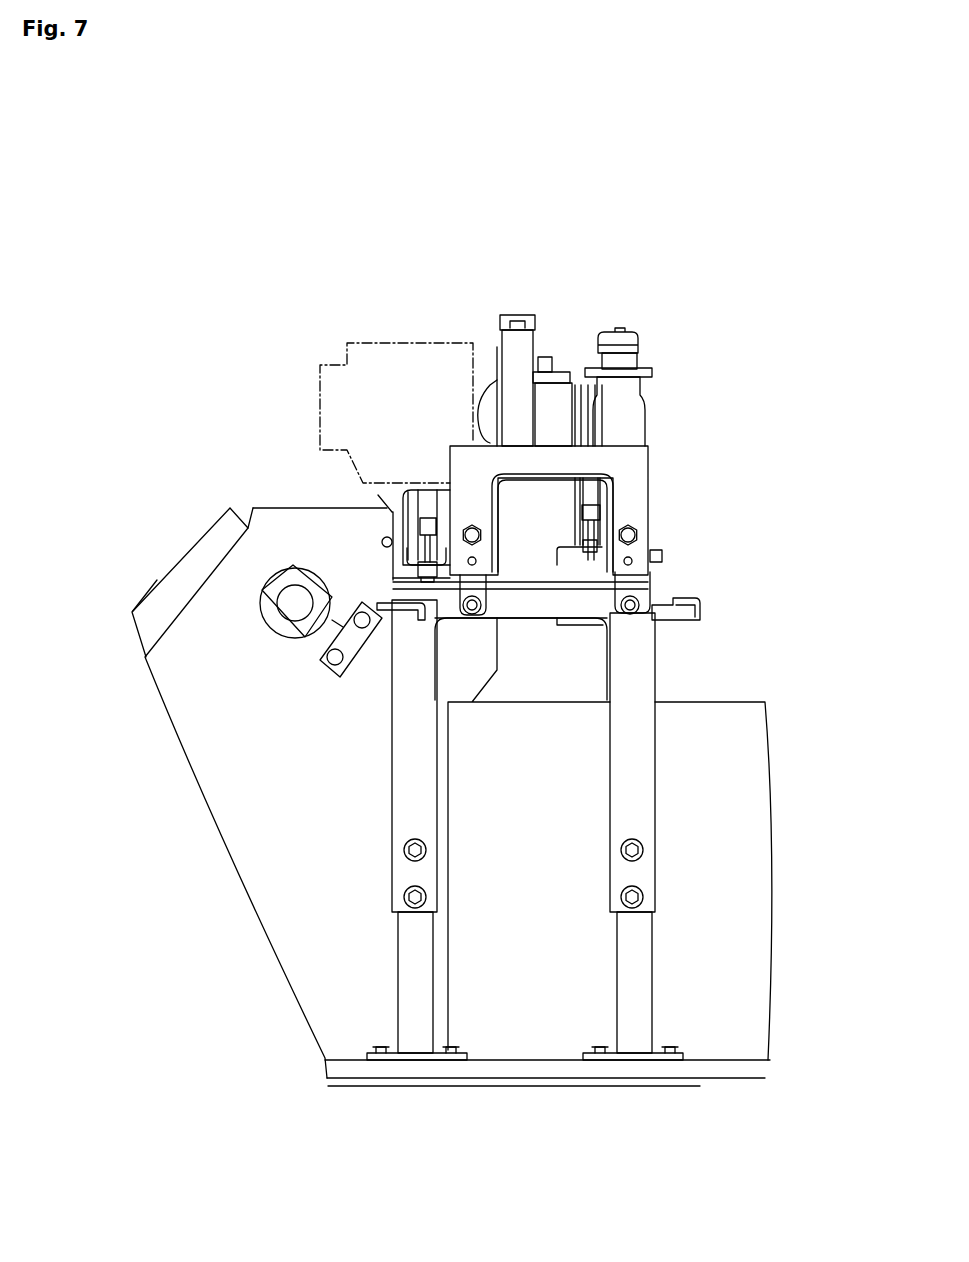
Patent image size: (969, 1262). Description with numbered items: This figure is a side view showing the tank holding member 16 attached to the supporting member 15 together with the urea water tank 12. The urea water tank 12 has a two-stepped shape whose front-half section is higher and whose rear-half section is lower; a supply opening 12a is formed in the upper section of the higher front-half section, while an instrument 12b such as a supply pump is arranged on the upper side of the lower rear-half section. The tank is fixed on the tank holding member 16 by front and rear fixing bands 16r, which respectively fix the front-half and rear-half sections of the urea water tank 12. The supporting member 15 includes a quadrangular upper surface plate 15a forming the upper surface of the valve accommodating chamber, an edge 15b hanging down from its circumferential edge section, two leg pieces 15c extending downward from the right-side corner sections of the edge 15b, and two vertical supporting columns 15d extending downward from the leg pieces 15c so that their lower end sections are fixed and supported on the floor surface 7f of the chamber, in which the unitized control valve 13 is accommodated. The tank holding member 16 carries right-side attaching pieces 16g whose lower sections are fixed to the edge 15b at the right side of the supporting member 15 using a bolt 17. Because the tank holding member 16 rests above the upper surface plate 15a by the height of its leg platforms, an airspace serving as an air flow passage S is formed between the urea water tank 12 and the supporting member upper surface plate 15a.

The floor surface 7f is at (512, 1050).
The urea water tank 12 is at (563, 395).
The supply opening 12a is at (632, 343).
The instrument 12b is at (397, 343).
The control valve 13 is at (717, 841).
The supporting member 15 is at (655, 742).
The upper surface plate 15a is at (568, 590).
The edge 15b is at (583, 602).
The leg piece 15c is at (415, 770).
The vertical supporting column 15d is at (412, 963).
The tank holding member 16 is at (645, 477).
The right-side attaching piece 16g is at (415, 543).
The fixing band 16r is at (583, 395).
The bolt 17 is at (470, 603).
The air flow passage S is at (525, 588).